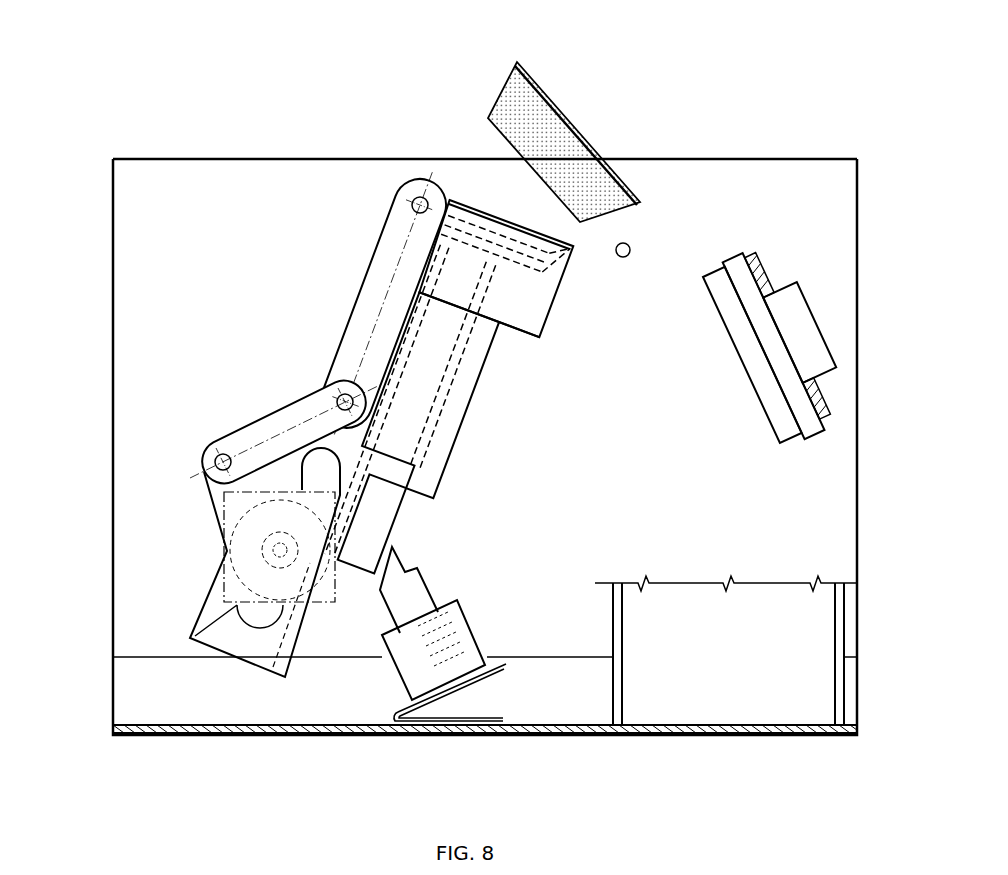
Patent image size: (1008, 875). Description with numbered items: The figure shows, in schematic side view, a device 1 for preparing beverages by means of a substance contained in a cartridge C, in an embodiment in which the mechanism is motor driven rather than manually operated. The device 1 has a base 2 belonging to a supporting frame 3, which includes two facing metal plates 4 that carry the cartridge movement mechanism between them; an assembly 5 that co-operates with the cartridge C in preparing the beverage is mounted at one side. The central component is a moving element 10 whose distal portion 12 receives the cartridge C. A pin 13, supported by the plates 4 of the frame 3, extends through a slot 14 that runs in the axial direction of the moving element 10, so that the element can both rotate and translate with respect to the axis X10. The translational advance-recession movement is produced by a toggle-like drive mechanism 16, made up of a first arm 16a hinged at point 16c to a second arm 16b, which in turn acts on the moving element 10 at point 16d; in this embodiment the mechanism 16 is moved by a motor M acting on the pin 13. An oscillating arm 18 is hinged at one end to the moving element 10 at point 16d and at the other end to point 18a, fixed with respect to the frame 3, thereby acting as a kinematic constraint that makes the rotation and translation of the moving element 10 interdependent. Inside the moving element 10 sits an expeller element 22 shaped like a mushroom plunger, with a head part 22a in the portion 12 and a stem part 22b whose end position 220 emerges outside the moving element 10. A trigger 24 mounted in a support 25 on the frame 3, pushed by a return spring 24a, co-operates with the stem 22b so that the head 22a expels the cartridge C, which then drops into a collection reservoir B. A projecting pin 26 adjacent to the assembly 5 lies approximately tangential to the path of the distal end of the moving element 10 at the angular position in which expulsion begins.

The device for preparing beverages 1 is at (698, 68).
The base 2 is at (543, 712).
The supporting frame 3 is at (196, 156).
The metal plates 4 is at (745, 159).
The assembly 5 is at (805, 297).
The moving element 10 is at (470, 420).
The cartridge receiving portion 12 is at (555, 305).
The pin 13 is at (352, 594).
The slot 14 is at (190, 638).
The drive mechanism 16 is at (232, 405).
The first arm 16a is at (222, 508).
The second arm 16b is at (262, 410).
The hinge point 16c is at (216, 458).
The articulation point 16d is at (328, 376).
The oscillating arm 18 is at (365, 300).
The oscillation axis point 18a is at (411, 205).
The expeller element 22 is at (430, 440).
The head part 22a is at (565, 335).
The stem part 22b is at (395, 526).
The trigger 24 is at (437, 566).
The return spring 24a is at (396, 665).
The support 25 is at (460, 612).
The projecting formation 26 is at (630, 247).
The end position of stem 220 is at (372, 622).
The collection reservoir B is at (676, 605).
The cartridge C is at (553, 101).
The motor M is at (225, 518).
The axis X10 is at (278, 550).